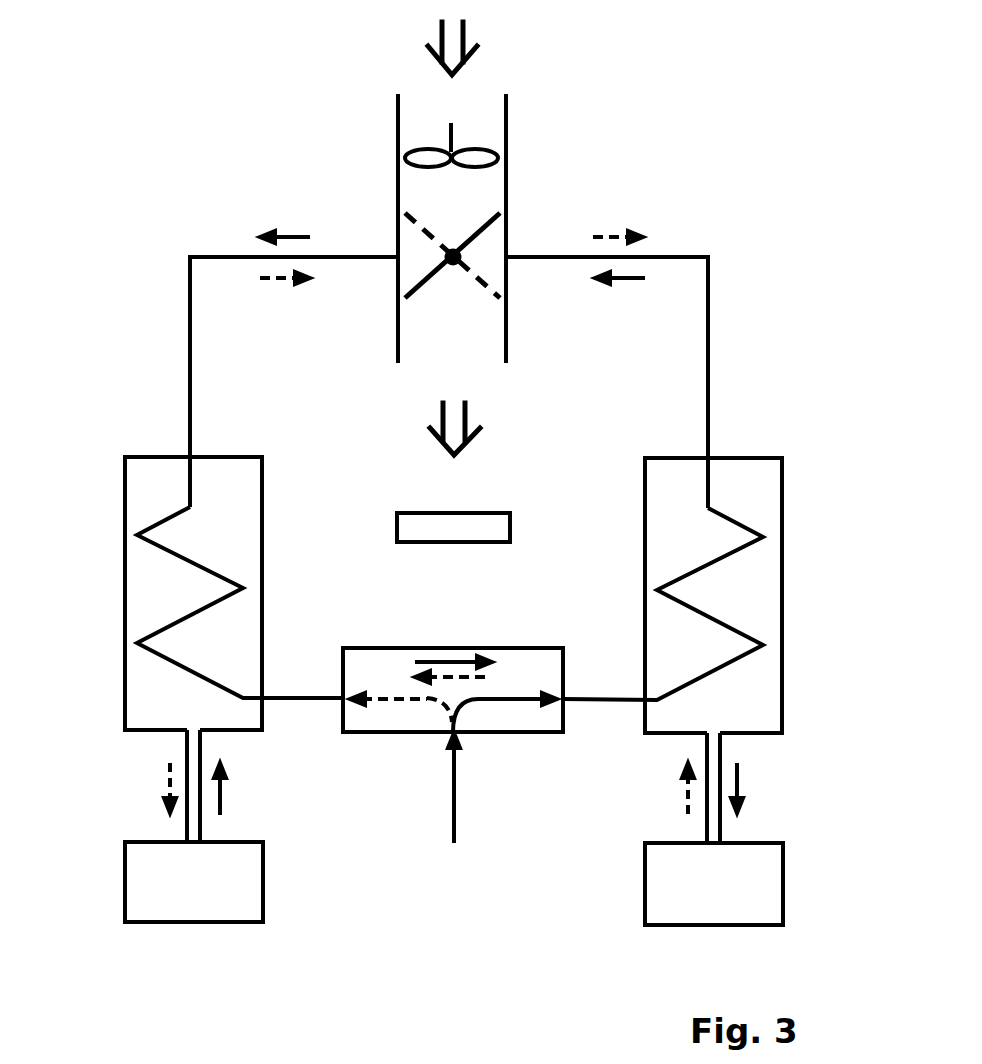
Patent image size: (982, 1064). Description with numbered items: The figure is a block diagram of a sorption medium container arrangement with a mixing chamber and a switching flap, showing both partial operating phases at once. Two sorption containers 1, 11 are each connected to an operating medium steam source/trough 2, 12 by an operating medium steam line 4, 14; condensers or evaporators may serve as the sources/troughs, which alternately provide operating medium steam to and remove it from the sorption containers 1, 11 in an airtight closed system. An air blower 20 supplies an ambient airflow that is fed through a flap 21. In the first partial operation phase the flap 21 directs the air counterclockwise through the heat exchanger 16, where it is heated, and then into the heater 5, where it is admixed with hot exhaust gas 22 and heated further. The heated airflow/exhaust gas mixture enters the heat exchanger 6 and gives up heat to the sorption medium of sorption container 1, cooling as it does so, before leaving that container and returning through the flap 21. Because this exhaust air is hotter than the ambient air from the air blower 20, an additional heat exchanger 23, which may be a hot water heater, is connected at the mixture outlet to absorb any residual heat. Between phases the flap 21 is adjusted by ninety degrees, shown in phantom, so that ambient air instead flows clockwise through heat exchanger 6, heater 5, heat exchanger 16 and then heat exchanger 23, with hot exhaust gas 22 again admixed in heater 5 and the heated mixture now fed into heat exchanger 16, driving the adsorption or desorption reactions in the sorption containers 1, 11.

The sorption container 1 is at (783, 620).
The operating medium steam source/trough 2 is at (787, 860).
The operating medium steam line 4 is at (723, 753).
The heater 5 is at (502, 732).
The heat exchanger 6 is at (737, 518).
The sorption container 11 is at (122, 625).
The operating medium steam source/trough 12 is at (122, 902).
The operating medium steam line 14 is at (183, 742).
The heat exchanger 16 is at (147, 523).
The air blower 20 is at (455, 127).
The flap 21 is at (510, 212).
The hot exhaust gas 22 is at (458, 838).
The heat exchanger 23 is at (470, 513).